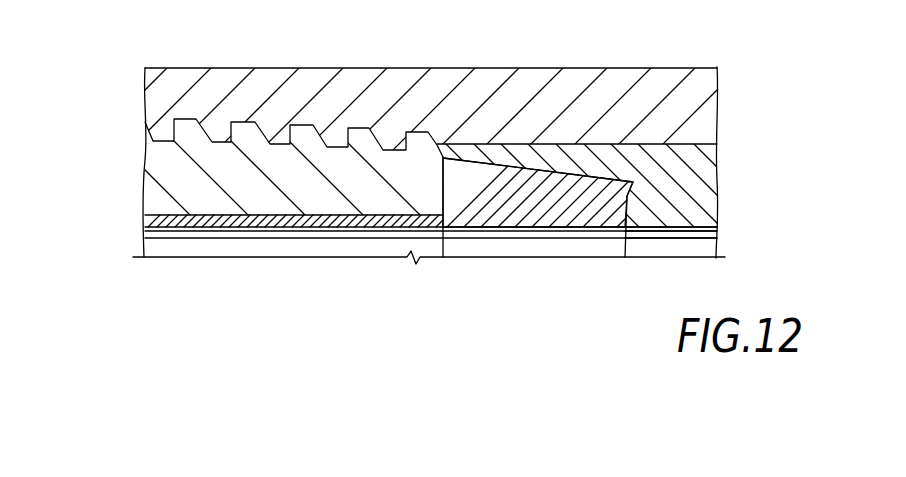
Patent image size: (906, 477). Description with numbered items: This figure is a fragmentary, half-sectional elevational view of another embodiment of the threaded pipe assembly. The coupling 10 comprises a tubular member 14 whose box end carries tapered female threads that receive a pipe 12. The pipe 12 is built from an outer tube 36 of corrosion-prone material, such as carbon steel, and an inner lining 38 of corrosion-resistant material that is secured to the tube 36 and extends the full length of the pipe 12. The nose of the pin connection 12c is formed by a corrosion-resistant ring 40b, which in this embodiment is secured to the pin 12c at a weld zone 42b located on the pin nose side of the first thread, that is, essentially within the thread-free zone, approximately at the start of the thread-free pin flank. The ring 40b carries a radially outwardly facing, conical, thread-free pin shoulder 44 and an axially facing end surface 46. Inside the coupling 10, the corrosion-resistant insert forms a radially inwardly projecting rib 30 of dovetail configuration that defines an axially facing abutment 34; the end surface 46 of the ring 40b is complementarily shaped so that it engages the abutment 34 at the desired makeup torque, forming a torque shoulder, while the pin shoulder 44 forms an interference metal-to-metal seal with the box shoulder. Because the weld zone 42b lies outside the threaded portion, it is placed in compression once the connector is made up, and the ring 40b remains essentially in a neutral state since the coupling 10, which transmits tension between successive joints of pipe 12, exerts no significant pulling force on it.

The coupling 10 is at (437, 53).
The tubular member 14 is at (540, 82).
The pin connection 12c is at (168, 163).
The pipe 12 is at (115, 192).
The outer tube 36 is at (198, 203).
The lining 38 is at (315, 228).
The weld zone 42b is at (440, 230).
The corrosion-resistant ring 40b is at (507, 210).
The pin shoulder 44 is at (575, 167).
The end surface 46 is at (630, 207).
The axially facing abutment 34 is at (630, 198).
The rib 30 is at (688, 208).